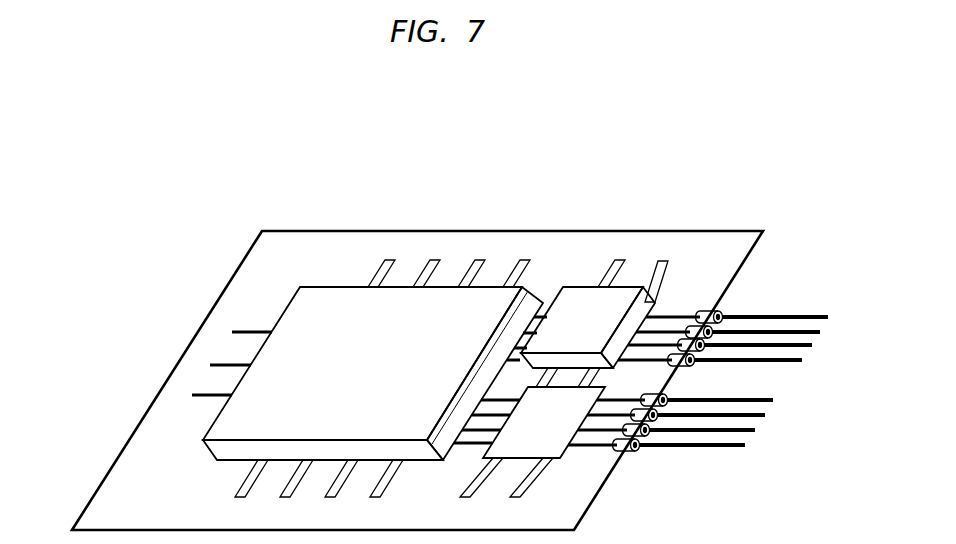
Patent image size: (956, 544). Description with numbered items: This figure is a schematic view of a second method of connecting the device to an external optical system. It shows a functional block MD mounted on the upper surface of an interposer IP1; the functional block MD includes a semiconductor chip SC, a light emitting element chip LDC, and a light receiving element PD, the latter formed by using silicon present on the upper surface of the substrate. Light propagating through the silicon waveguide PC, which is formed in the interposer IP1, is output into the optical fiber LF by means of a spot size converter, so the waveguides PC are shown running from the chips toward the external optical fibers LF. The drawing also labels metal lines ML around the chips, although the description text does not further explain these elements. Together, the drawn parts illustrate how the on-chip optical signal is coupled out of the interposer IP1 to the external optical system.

The interposer IP1 is at (275, 262).
The semiconductor chip SC is at (333, 297).
The metal line ML is at (433, 263).
The functional block MD is at (547, 226).
The light emitting element chip LDC is at (580, 296).
The light receiving element PD is at (558, 447).
The silicon waveguide PC is at (676, 312).
The optical fiber LF is at (758, 314).